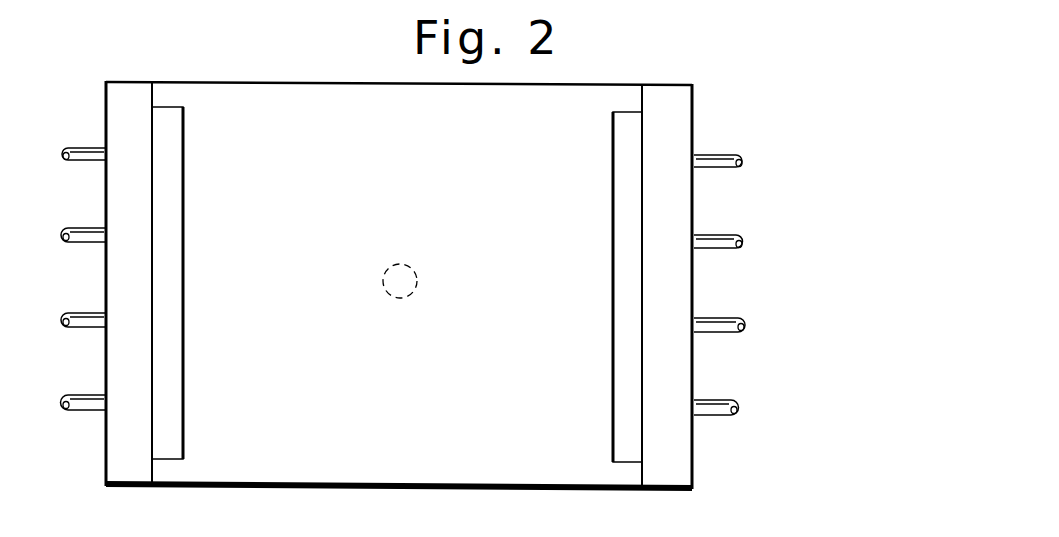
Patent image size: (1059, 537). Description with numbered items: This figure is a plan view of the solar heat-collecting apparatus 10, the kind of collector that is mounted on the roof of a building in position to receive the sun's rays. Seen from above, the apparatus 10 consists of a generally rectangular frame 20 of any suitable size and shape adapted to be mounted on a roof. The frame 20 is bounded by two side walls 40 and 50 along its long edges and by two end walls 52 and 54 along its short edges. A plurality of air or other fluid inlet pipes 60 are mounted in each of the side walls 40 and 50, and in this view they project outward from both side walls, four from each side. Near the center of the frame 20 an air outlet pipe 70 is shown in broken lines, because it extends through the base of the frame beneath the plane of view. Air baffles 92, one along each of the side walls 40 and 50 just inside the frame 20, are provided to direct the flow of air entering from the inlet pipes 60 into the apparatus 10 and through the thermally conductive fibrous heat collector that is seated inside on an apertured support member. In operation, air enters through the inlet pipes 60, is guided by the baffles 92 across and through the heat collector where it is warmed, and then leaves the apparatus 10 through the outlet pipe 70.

The heat-collecting apparatus 10 is at (697, 60).
The frame 20 is at (102, 459).
The side wall 40 is at (106, 355).
The side wall 50 is at (693, 288).
The end wall 52 is at (294, 58).
The end wall 54 is at (580, 491).
The fluid inlet pipes 60 is at (82, 150).
The air outlet pipe 70 is at (410, 265).
The air baffles 92 is at (170, 117).